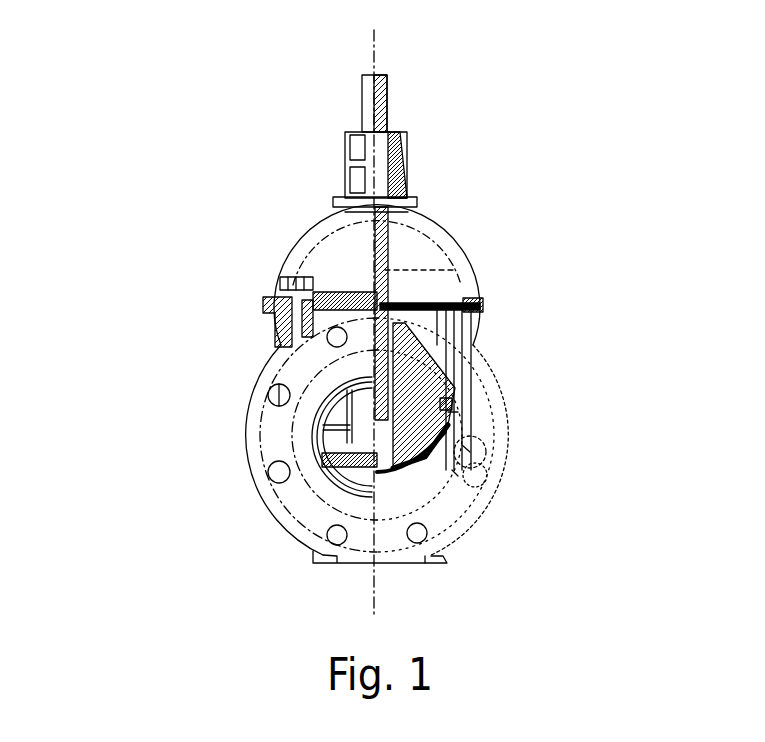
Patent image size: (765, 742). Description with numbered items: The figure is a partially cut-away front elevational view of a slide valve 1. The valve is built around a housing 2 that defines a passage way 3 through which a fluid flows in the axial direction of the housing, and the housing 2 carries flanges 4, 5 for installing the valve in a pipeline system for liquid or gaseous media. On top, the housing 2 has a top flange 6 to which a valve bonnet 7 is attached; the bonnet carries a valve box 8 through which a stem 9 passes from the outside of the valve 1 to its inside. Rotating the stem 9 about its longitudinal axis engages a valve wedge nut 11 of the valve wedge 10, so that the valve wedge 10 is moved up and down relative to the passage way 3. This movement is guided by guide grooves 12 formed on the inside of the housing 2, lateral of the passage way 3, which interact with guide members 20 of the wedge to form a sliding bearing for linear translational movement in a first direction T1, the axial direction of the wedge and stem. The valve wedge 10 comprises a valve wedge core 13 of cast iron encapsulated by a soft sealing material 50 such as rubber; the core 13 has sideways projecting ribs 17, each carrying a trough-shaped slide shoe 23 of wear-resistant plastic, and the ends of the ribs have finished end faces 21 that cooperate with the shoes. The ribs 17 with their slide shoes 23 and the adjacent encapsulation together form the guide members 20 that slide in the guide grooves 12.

The slide valve 1 is at (155, 209).
The housing 2 is at (292, 440).
The passage way 3 is at (352, 488).
The flange 4 is at (286, 505).
The flange 5 is at (428, 553).
The top flange 6 is at (272, 299).
The valve bonnet 7 is at (307, 268).
The valve box 8 is at (408, 158).
The stem 9 is at (393, 262).
The valve wedge 10 is at (354, 411).
The valve wedge nut 11 is at (410, 322).
The guide grooves 12 is at (463, 450).
The valve wedge core 13 is at (424, 384).
The ribs 17 is at (450, 404).
The guide members 20 is at (453, 410).
The end faces 21 is at (450, 488).
The trough-shaped slide shoe 23 is at (460, 430).
The soft sealing material 50 is at (455, 470).
The first direction T1 is at (379, 61).